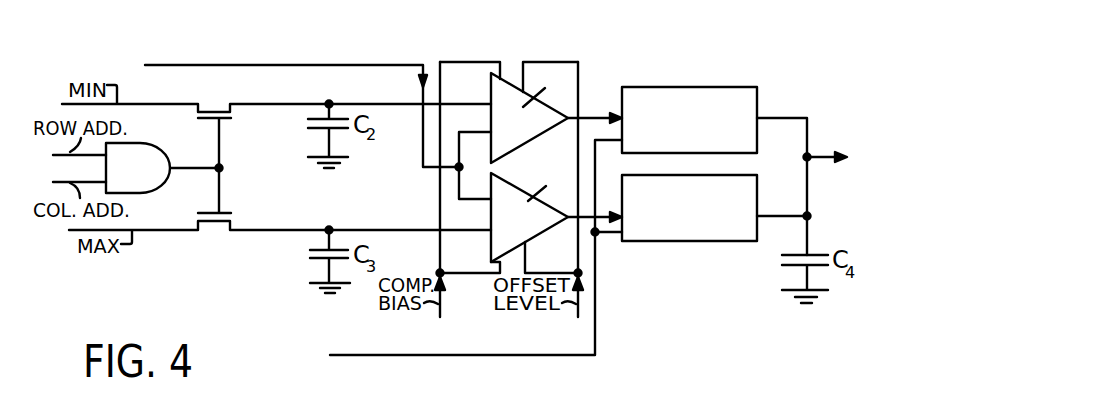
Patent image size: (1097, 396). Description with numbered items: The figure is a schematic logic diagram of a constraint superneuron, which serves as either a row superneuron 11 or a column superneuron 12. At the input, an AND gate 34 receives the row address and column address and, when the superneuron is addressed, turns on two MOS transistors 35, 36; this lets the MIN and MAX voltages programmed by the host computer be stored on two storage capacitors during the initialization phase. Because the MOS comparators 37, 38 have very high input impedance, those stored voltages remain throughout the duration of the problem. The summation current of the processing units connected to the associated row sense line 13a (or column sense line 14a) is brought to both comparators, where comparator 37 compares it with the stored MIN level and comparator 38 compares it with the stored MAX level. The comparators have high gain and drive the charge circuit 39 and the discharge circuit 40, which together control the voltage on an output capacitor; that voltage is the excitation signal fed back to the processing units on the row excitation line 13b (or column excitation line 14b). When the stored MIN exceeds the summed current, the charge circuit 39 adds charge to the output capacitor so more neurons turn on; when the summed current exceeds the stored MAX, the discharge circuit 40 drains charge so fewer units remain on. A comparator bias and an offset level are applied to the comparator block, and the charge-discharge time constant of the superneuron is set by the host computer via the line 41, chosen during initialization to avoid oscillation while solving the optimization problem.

The AND gate 34 is at (166, 149).
The MOS transistor 35 is at (233, 117).
The MOS transistor 36 is at (233, 217).
The MOS comparator 37 is at (529, 115).
The MOS comparator 38 is at (529, 214).
The charge circuit 39 is at (641, 86).
The discharge circuit 40 is at (665, 241).
The line 41 is at (597, 293).
The row sense line 13a is at (302, 106).
The column sense line 14a is at (302, 106).
The row excitation line 13b is at (817, 173).
The column excitation line 14b is at (826, 155).
The row superneuron 11 is at (760, 347).
The column superneuron 12 is at (673, 302).